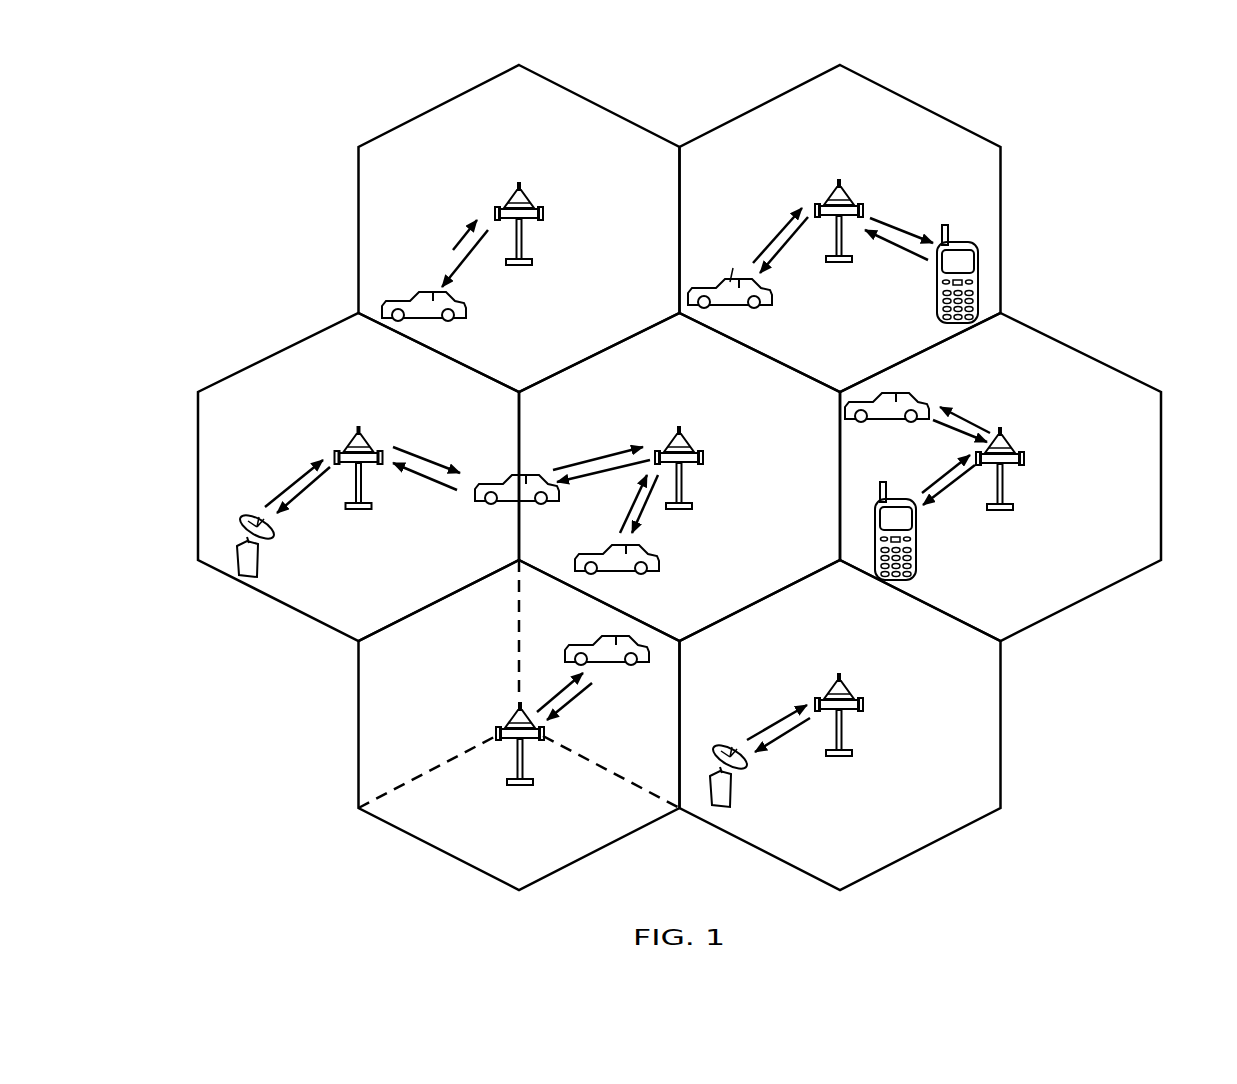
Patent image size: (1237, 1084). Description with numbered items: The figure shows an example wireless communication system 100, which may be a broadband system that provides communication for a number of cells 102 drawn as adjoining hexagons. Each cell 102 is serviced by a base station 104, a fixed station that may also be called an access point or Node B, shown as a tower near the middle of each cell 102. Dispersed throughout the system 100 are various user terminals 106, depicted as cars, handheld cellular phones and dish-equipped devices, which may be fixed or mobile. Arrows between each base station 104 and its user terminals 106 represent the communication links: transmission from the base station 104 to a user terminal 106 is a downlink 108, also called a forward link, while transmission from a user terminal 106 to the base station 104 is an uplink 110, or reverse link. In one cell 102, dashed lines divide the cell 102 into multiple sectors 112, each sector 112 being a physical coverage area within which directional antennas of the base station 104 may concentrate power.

The wireless communication system 100 is at (716, 477).
The cell 102 is at (447, 100).
The base station 104 is at (519, 180).
The user terminal 106 is at (463, 307).
The downlink 108 is at (468, 272).
The uplink 110 is at (455, 250).
The sector 112 is at (577, 845).